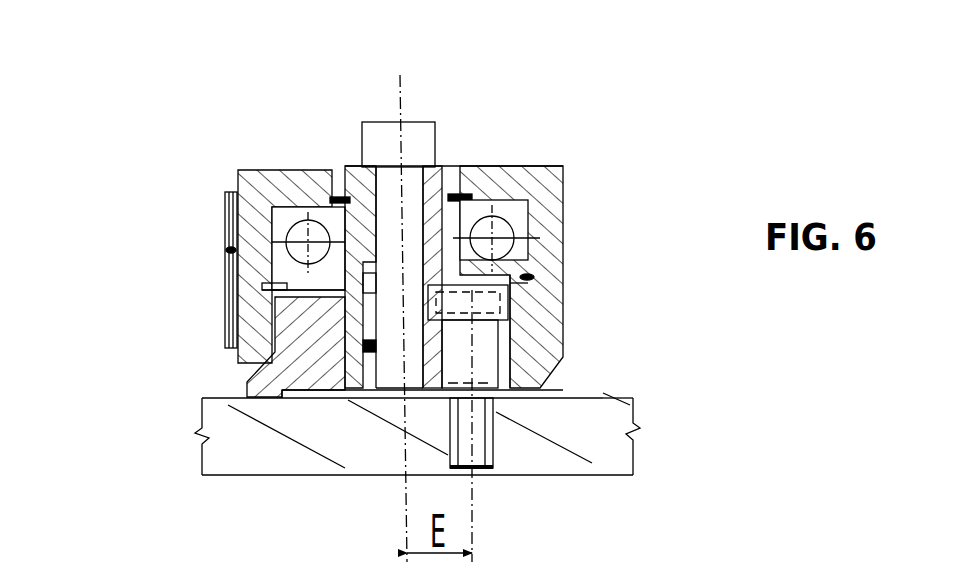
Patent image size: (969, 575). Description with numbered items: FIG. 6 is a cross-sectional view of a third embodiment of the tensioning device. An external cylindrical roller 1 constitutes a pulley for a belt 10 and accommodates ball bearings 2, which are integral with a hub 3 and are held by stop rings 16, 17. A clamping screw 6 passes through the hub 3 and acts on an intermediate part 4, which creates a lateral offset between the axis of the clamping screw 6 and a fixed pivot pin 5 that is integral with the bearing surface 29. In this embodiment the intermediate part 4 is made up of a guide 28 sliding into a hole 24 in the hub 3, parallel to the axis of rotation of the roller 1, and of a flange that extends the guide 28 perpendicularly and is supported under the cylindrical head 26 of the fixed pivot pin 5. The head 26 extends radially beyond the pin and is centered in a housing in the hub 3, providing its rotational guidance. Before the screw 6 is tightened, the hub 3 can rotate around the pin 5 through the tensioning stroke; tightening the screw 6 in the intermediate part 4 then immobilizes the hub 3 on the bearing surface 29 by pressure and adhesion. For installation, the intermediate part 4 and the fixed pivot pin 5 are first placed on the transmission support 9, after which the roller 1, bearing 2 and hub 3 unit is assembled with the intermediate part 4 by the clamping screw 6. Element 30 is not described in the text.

The external cylindrical roller 1 is at (253, 198).
The ball bearing 2 is at (308, 240).
The hub 3 is at (358, 200).
The intermediate part 4 is at (345, 400).
The fixed pivot pin 5 is at (473, 355).
The clamping screw 6 is at (412, 145).
The transmission support 9 is at (233, 443).
The belt 10 is at (231, 250).
The stop ring 16 is at (528, 277).
The stop ring 17 is at (479, 182).
The hole 24 is at (444, 257).
The cylindrical head 26 is at (487, 308).
The guide 28 is at (367, 312).
The bearing surface 29 is at (204, 394).
The seal ring 30 is at (463, 192).